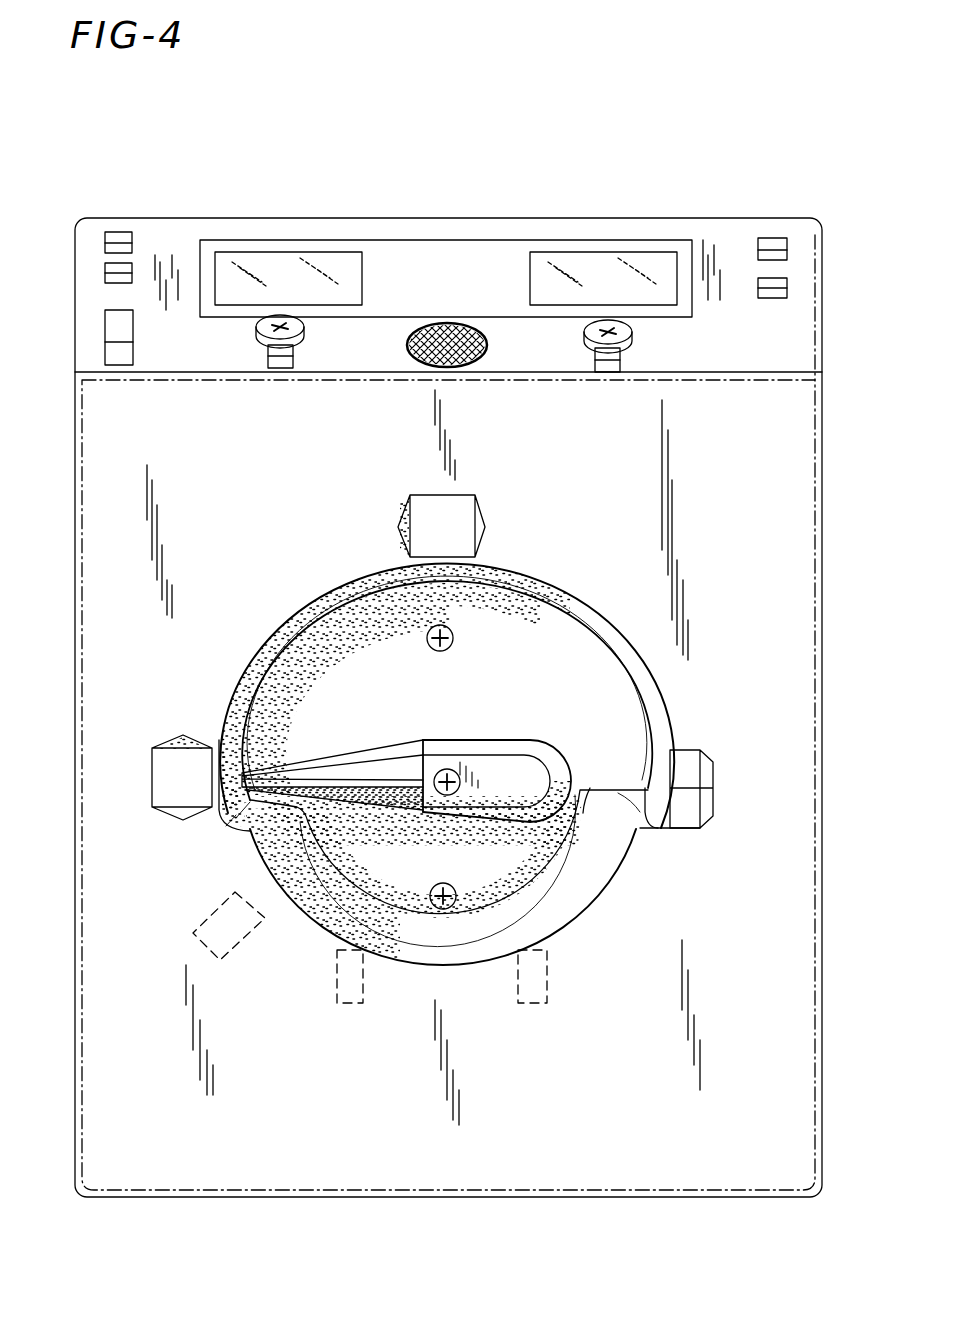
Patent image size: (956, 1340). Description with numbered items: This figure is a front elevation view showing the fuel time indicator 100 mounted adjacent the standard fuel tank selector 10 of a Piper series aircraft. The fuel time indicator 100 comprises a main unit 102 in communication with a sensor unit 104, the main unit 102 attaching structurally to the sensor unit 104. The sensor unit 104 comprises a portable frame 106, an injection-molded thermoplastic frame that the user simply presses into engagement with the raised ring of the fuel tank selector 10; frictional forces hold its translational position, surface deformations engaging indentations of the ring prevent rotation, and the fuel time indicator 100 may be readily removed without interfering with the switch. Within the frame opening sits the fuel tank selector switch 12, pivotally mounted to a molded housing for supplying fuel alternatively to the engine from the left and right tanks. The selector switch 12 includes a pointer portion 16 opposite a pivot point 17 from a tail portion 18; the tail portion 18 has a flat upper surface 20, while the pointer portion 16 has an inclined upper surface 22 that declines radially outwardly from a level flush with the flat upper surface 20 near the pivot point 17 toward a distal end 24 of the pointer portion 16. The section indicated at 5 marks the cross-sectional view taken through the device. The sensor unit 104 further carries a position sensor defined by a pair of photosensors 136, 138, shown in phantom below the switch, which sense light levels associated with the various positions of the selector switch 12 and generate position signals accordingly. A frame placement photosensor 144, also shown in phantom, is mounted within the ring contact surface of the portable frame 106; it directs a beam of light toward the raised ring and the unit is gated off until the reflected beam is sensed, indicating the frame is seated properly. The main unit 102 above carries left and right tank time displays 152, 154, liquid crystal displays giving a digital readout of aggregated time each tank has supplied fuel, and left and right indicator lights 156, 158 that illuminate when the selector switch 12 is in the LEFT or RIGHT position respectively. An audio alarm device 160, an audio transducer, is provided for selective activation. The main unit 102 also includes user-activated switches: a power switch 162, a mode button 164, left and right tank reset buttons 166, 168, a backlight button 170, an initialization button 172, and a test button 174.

The fuel time indicator 100 is at (500, 205).
The main unit 102 is at (74, 327).
The sensor unit 104 is at (72, 518).
The portable frame 106 is at (96, 606).
The left tank time display 152 is at (290, 250).
The right tank time display 154 is at (636, 252).
The left indicator light 156 is at (266, 336).
The right indicator light 158 is at (594, 340).
The audio alarm device 160 is at (412, 362).
The power switch 162 is at (106, 348).
The mode button 164 is at (112, 232).
The left tank reset button 166 is at (278, 368).
The right tank reset button 168 is at (604, 372).
The backlight button 170 is at (108, 273).
The initialization button 172 is at (782, 240).
The test button 174 is at (764, 298).
The fuel tank selector 10 is at (508, 618).
The fuel tank selector switch 12 is at (428, 742).
The pointer portion 16 is at (370, 815).
The pivot point 17 is at (447, 796).
The tail portion 18 is at (518, 742).
The flat upper surface 20 is at (514, 802).
The inclined upper surface 22 is at (312, 770).
The distal end 24 is at (240, 752).
The section line 5- 5 is at (42, 842).
The photosensor 136 is at (340, 1004).
The photosensor 138 is at (532, 1004).
The frame placement photosensor 144 is at (207, 910).